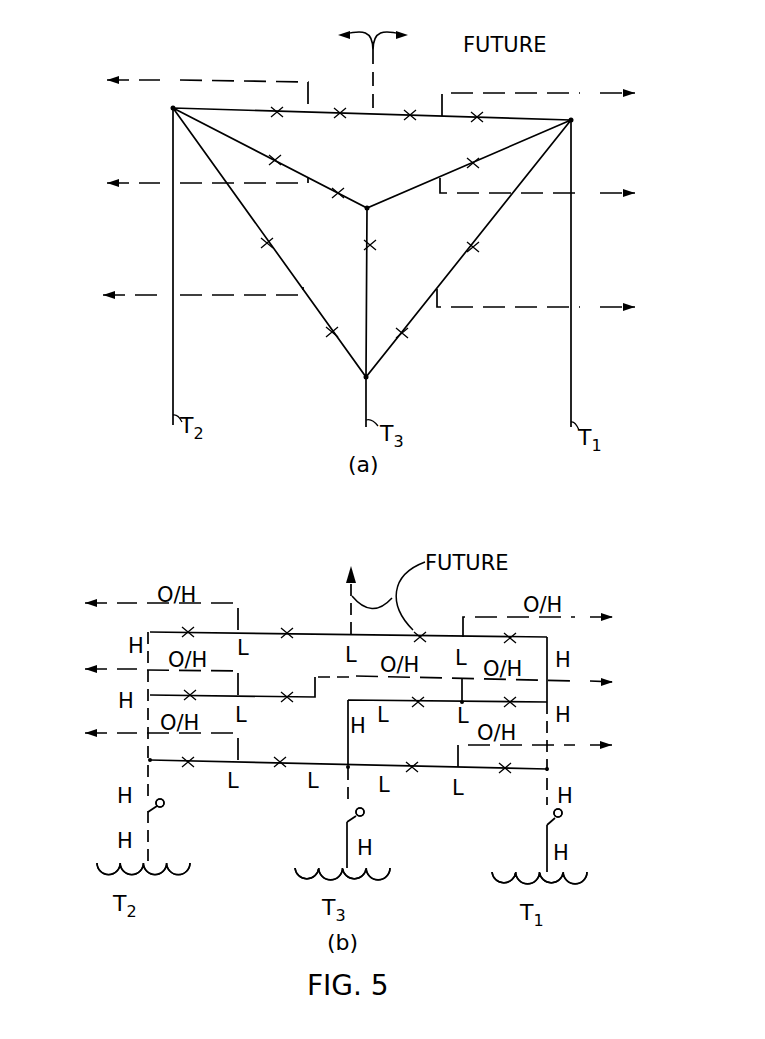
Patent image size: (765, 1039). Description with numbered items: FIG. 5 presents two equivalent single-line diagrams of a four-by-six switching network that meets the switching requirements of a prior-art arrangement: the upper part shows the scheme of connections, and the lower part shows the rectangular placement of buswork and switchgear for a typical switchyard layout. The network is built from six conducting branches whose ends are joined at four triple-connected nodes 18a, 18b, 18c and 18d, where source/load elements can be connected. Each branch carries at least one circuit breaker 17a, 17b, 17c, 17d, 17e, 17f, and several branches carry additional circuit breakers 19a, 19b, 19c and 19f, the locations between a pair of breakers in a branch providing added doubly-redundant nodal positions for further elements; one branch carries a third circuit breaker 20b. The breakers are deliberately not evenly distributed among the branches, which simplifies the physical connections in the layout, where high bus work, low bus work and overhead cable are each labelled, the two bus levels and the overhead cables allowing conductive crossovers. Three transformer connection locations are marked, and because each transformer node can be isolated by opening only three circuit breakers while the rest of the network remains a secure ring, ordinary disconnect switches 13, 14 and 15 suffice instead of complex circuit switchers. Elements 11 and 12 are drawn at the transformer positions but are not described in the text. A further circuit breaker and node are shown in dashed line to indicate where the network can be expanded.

The transformer T1 winding 11 is at (587, 874).
The transformer T2 winding 12 is at (190, 865).
The disconnect switch 13 is at (547, 820).
The disconnect switch 14 is at (156, 806).
The disconnect switch 15 is at (347, 820).
The circuit breaker 17a is at (280, 160).
The circuit breaker 17b is at (477, 121).
The circuit breaker 17c is at (404, 336).
The circuit breaker 17d is at (373, 246).
The circuit breaker 17e is at (476, 167).
The circuit breaker 17f is at (266, 246).
The node 18a is at (172, 108).
The node 18b is at (575, 122).
The node 18c is at (369, 379).
The node 18d is at (368, 205).
The additional circuit breaker 19a is at (337, 197).
The additional circuit breaker 19b is at (341, 117).
The additional circuit breaker 19c is at (475, 251).
The additional circuit breaker 19f is at (330, 334).
The additional circuit breaker 20b is at (278, 116).